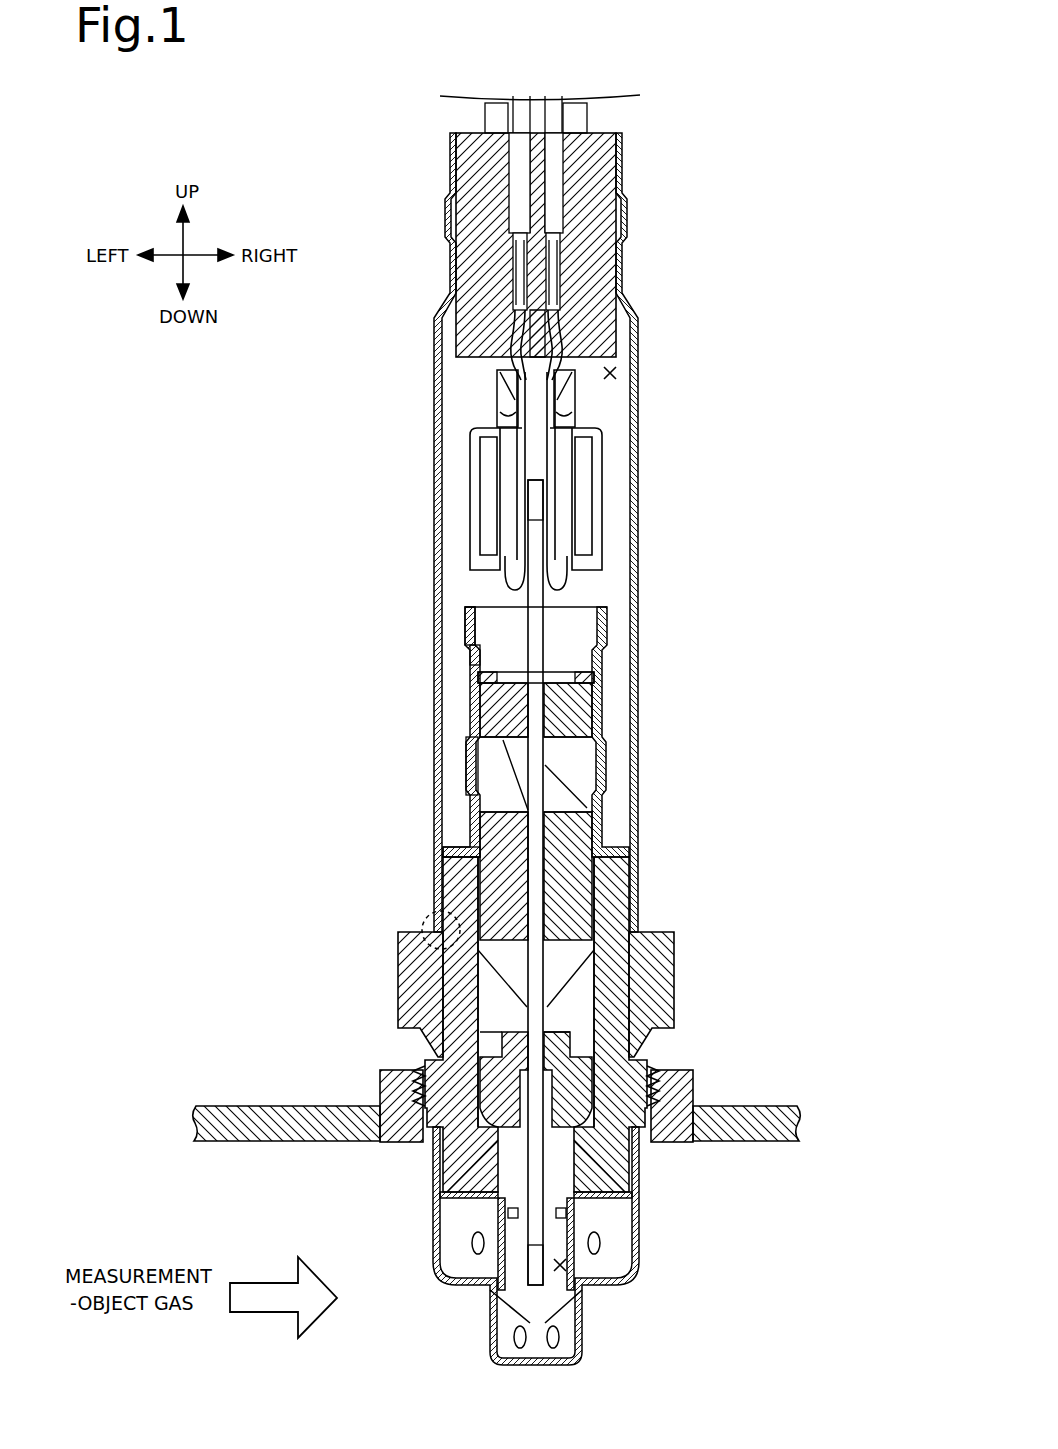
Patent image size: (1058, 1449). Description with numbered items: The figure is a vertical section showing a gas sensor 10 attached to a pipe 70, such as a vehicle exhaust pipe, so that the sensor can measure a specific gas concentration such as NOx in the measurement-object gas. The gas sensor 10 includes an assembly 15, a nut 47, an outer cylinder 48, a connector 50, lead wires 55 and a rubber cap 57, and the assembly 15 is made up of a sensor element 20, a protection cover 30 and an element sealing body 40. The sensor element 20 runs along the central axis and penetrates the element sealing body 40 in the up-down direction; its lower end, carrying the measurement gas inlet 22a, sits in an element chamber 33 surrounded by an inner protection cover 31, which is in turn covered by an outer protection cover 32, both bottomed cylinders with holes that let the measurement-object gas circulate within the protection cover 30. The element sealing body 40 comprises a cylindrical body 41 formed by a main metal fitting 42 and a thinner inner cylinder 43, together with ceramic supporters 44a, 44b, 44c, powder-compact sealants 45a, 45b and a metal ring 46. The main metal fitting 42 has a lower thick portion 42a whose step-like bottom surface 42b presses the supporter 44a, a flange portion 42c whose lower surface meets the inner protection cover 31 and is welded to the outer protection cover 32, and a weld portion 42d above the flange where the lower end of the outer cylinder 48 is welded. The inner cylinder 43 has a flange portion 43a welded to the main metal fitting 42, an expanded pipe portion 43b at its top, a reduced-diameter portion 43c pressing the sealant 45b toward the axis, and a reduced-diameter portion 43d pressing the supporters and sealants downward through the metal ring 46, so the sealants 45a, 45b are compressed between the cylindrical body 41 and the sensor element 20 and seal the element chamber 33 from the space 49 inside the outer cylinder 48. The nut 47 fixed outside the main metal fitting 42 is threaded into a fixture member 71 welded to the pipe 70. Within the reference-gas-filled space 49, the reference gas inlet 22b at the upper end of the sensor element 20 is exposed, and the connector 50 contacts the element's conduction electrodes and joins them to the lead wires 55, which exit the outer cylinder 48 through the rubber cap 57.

The gas sensor 10 is at (765, 170).
The assembly 15 is at (826, 820).
The sensor element 20 is at (545, 1088).
The measurement gas inlet 22a is at (543, 1288).
The reference gas inlet 22b is at (538, 482).
The protection cover 30 is at (624, 1246).
The inner protection cover 31 is at (641, 1220).
The outer protection cover 32 is at (647, 1240).
The element chamber 33 is at (565, 1266).
The element sealing body 40 is at (775, 682).
The cylindrical body 41 is at (710, 812).
The main metal fitting 42 is at (622, 886).
The thick portion 42a is at (467, 1168).
The bottom surface 42b is at (505, 1125).
The flange portion 42c is at (423, 1127).
The weld portion 42d is at (425, 918).
The inner cylinder 43 is at (603, 820).
The flange portion 43a is at (452, 845).
The expanded pipe portion 43b is at (465, 607).
The reduced-diameter portion 43c is at (468, 748).
The reduced-diameter portion 43d is at (468, 650).
The supporter 44a is at (575, 1060).
The supporter 44b is at (585, 920).
The supporter 44c is at (588, 716).
The sealant 45a is at (600, 985).
The sealant 45b is at (581, 783).
The metal ring 46 is at (598, 677).
The nut 47 is at (411, 957).
The outer cylinder 48 is at (636, 593).
The space 49 is at (618, 378).
The connector 50 is at (603, 556).
The lead wire 55 is at (520, 180).
The rubber cap 57 is at (592, 331).
The pipe 70 is at (278, 1122).
The fixture member 71 is at (398, 1090).